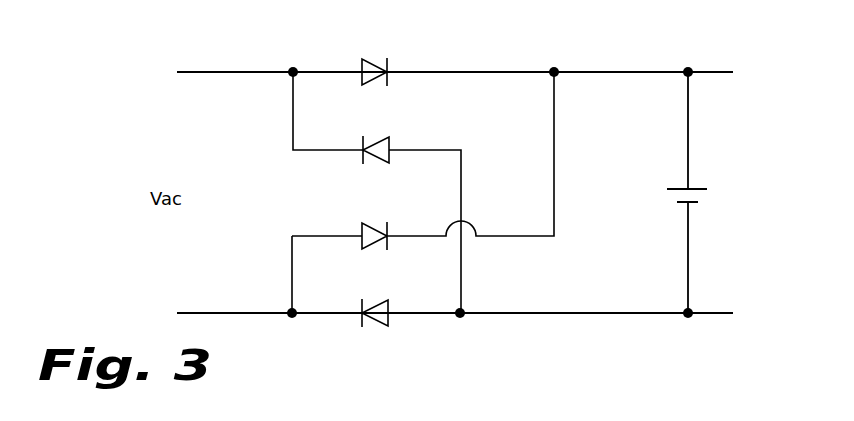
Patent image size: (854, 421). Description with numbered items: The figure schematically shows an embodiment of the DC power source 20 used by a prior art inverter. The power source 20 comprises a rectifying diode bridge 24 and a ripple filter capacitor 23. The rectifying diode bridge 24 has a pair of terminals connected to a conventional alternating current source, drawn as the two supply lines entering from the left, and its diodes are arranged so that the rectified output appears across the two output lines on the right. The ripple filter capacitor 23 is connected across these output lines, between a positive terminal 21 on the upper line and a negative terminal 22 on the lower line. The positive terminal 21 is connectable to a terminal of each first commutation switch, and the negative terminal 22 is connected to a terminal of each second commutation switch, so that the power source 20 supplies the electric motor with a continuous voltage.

The power source 20 is at (559, 44).
The positive terminal 21 is at (694, 76).
The negative terminal 22 is at (694, 307).
The ripple filter capacitor 23 is at (660, 201).
The rectifying diode bridge 24 is at (369, 52).